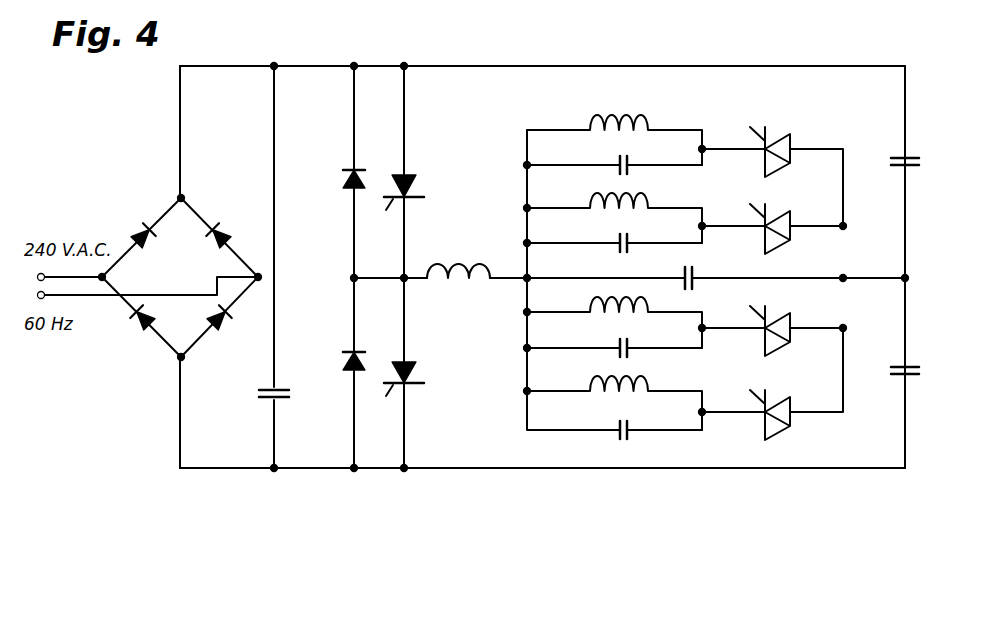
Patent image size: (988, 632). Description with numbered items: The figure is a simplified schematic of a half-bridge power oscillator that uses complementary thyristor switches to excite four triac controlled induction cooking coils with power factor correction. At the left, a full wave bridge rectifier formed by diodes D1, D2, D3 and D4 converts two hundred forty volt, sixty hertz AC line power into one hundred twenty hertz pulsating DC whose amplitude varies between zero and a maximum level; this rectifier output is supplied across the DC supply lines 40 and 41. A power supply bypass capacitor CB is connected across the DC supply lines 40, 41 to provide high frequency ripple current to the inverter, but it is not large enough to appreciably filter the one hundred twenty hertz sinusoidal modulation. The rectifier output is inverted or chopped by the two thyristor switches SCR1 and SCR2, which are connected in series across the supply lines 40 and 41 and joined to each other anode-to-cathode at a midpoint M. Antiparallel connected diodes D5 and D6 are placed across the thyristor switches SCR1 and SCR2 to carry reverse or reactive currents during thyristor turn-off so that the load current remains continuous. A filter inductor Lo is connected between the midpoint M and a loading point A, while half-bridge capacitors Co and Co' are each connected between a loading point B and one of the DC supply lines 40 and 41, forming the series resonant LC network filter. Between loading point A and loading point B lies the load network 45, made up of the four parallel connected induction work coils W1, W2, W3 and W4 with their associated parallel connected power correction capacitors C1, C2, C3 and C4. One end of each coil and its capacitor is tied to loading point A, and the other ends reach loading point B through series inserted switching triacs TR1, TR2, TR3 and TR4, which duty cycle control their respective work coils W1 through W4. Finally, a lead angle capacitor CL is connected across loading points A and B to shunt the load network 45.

The DC supply line 40 is at (322, 66).
The DC supply line 41 is at (321, 469).
The load network 45 is at (632, 101).
The diode D1 is at (141, 226).
The diode D2 is at (221, 228).
The diode D3 is at (220, 330).
The diode D4 is at (138, 330).
The antiparallel connected diode D5 is at (348, 168).
The antiparallel connected diode D6 is at (348, 352).
The thyristor switch SCR1 is at (424, 195).
The thyristor switch SCR2 is at (424, 380).
The power supply bypass capacitor CB is at (260, 400).
The midpoint M is at (400, 276).
The filter inductor Lo is at (456, 262).
The loading point A is at (521, 282).
The loading point B is at (845, 275).
The lead angle capacitor CL is at (694, 276).
The induction work coil W1 is at (650, 118).
The induction work coil W2 is at (630, 200).
The induction work coil W3 is at (628, 303).
The induction work coil W4 is at (636, 390).
The power correction capacitor C1 is at (618, 158).
The power correction capacitor C2 is at (618, 238).
The power correction capacitor C3 is at (618, 344).
The power correction capacitor C4 is at (632, 440).
The switching triac TR1 is at (778, 138).
The switching triac TR2 is at (778, 216).
The switching triac TR3 is at (775, 320).
The switching triac TR4 is at (775, 400).
The half-bridge capacitor Co is at (887, 137).
The half-bridge capacitor Co' is at (887, 403).